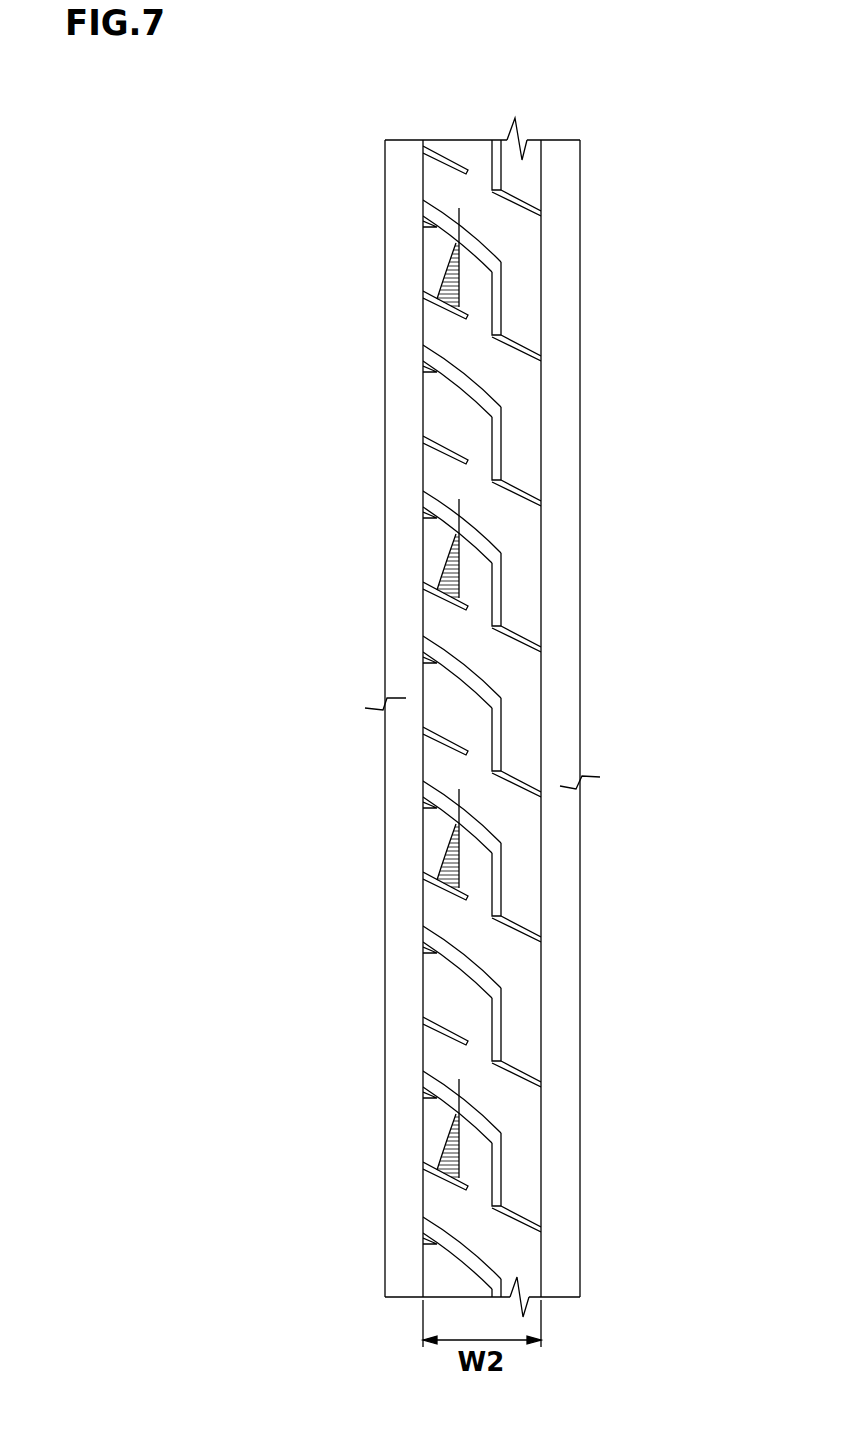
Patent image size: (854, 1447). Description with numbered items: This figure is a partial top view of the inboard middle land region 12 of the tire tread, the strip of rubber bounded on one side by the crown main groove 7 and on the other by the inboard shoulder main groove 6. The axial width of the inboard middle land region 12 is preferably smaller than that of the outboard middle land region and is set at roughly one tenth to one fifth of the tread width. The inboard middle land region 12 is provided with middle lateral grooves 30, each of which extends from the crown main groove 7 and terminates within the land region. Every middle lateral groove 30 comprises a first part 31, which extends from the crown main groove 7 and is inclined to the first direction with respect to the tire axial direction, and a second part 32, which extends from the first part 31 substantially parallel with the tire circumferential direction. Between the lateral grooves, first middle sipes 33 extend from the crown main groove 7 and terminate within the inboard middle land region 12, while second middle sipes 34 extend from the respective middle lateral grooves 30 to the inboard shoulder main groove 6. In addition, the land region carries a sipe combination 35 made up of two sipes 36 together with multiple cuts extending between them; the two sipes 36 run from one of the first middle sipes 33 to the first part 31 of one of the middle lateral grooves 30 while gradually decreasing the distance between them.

The inboard shoulder main groove 6 is at (562, 180).
The crown main groove 7 is at (406, 178).
The inboard middle land region 12 is at (482, 202).
The middle lateral groove 30 is at (519, 703).
The first part 31 is at (473, 680).
The second part 32 is at (497, 737).
The first middle sipe 33 is at (443, 303).
The second middle sipe 34 is at (520, 342).
The sipe combination 35 is at (448, 575).
The sipe 36 is at (455, 830).